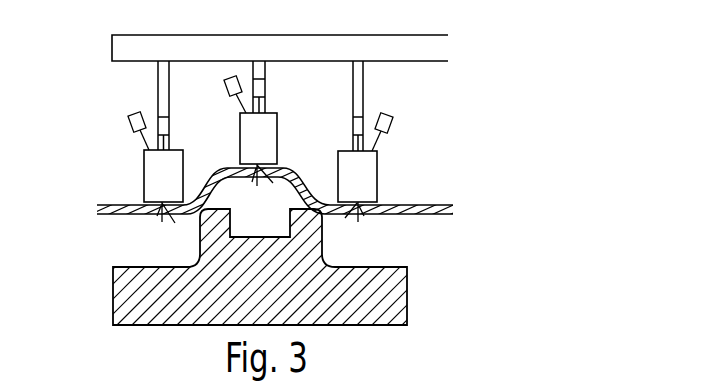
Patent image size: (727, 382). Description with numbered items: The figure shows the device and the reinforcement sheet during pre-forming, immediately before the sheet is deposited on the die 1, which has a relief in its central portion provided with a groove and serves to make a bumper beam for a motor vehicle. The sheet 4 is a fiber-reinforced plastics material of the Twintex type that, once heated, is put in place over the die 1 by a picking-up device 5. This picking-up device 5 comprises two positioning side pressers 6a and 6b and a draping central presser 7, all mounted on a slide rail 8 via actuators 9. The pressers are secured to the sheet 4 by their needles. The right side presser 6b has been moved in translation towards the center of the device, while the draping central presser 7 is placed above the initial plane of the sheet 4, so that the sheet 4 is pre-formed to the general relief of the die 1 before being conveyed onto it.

The die 1 is at (425, 287).
The sheet 4 is at (440, 206).
The picking-up device 5 is at (104, 70).
The positioning side presser 6a is at (134, 168).
The positioning side presser 6b is at (391, 162).
The draping central presser 7 is at (285, 152).
The slide rail 8 is at (427, 38).
The actuators 9 is at (167, 76).